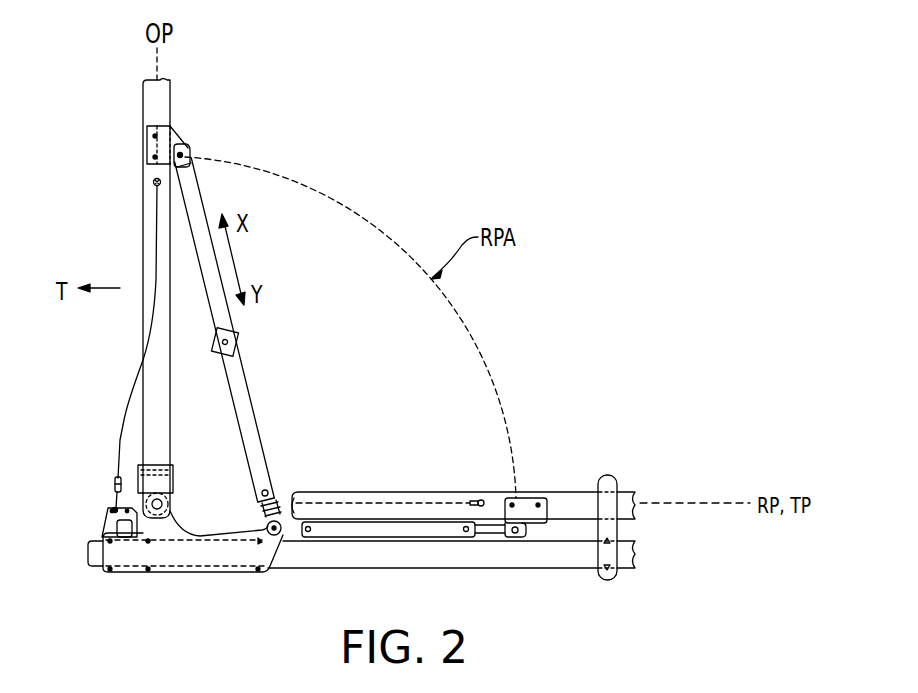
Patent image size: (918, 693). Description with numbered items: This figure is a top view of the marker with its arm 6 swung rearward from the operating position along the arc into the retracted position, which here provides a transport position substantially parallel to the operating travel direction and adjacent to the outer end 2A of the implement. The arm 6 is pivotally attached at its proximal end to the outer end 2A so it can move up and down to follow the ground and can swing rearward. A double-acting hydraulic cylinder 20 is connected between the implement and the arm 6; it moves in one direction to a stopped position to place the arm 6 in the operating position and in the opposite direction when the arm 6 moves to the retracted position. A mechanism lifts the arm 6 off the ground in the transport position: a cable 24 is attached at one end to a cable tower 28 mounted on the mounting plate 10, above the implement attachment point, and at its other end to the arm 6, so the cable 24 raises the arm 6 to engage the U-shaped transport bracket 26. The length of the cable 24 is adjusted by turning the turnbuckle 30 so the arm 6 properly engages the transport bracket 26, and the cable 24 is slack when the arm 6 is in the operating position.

The arm 6 is at (143, 110).
The hydraulic cylinder 20 is at (247, 386).
The cable 24 is at (122, 412).
The turnbuckle 30 is at (114, 487).
The cable tower 28 is at (108, 513).
The mounting plate 10 is at (160, 574).
The outer end of the implement 2A is at (405, 569).
The transport bracket 26 is at (617, 478).